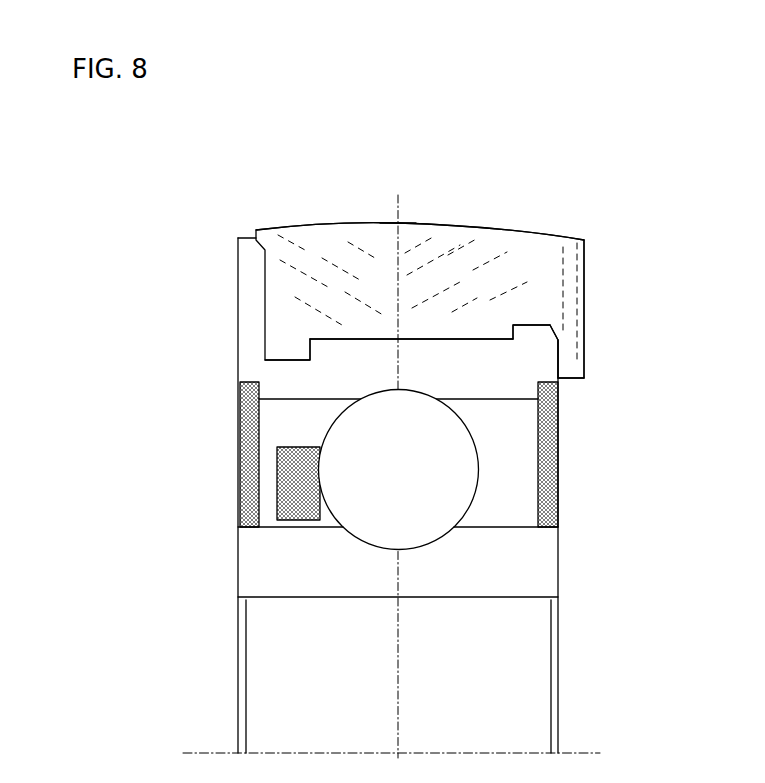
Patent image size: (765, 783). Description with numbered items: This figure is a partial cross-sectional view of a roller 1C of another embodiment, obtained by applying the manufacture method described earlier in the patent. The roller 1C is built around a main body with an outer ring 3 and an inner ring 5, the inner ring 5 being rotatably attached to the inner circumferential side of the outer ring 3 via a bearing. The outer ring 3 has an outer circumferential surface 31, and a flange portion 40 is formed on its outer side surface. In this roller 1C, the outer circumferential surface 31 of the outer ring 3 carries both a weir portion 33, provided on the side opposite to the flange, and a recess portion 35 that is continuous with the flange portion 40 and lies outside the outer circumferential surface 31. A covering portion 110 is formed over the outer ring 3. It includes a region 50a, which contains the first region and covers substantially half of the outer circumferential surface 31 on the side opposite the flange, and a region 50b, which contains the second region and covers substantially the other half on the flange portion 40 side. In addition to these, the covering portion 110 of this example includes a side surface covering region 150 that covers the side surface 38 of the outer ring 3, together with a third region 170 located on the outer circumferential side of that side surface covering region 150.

The roller 1C is at (610, 180).
The region 50a is at (504, 228).
The region 50b is at (303, 226).
The covering portion 110 is at (362, 222).
The third region 170 is at (585, 262).
The side surface covering region 150 is at (585, 357).
The recess portion 35 is at (292, 360).
The outer circumferential surface 31 is at (421, 339).
The weir portion 33 is at (533, 331).
The side surface 38 is at (558, 357).
The flange portion 40 is at (238, 242).
The outer ring 3 is at (238, 372).
The inner ring 5 is at (243, 562).